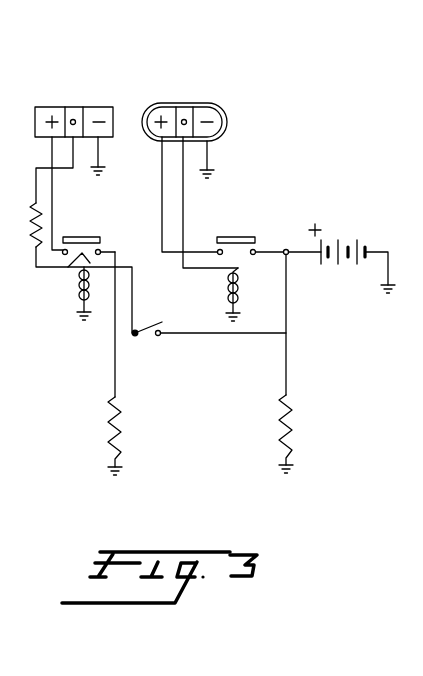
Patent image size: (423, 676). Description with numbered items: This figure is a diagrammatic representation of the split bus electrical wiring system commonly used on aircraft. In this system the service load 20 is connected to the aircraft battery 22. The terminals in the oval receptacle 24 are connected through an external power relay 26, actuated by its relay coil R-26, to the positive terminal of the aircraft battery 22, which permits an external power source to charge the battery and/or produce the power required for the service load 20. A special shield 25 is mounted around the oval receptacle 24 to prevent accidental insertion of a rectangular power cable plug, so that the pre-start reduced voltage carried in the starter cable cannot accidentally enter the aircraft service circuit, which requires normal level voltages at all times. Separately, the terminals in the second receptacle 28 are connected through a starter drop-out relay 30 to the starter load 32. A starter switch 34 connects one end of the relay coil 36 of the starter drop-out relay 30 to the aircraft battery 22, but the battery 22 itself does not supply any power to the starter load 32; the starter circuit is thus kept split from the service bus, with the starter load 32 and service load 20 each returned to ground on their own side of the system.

The service load 20 is at (291, 438).
The aircraft battery 22 is at (352, 233).
The receptacle 24 is at (215, 110).
The shield 25 is at (191, 106).
The external power relay 26 is at (237, 236).
The relay coil R-26 is at (256, 294).
The receptacle 28 is at (47, 105).
The starter drop-out relay 30 is at (77, 234).
The starter load 32 is at (123, 441).
The starter switch 34 is at (209, 317).
The relay coil 36 is at (75, 284).